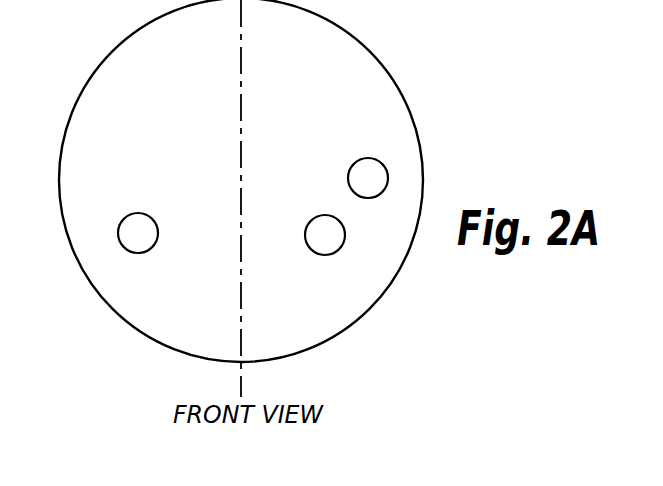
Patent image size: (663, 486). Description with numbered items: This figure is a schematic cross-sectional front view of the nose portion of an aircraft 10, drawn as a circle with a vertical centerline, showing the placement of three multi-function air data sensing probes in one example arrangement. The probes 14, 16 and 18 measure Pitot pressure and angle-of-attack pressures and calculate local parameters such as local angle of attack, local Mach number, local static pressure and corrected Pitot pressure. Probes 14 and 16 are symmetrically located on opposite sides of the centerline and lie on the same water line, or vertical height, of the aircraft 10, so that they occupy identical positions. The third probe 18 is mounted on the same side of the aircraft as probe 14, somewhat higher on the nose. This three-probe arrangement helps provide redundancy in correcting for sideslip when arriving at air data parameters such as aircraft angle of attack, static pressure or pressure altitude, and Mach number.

The aircraft 10 is at (355, 320).
The multi-function probe 14 is at (311, 217).
The multi-function probe 16 is at (132, 213).
The multi-function probe 18 is at (369, 158).